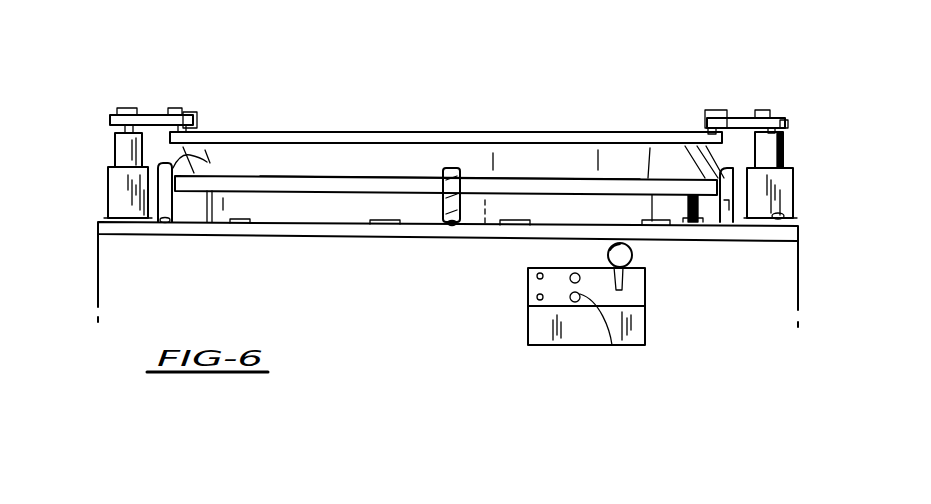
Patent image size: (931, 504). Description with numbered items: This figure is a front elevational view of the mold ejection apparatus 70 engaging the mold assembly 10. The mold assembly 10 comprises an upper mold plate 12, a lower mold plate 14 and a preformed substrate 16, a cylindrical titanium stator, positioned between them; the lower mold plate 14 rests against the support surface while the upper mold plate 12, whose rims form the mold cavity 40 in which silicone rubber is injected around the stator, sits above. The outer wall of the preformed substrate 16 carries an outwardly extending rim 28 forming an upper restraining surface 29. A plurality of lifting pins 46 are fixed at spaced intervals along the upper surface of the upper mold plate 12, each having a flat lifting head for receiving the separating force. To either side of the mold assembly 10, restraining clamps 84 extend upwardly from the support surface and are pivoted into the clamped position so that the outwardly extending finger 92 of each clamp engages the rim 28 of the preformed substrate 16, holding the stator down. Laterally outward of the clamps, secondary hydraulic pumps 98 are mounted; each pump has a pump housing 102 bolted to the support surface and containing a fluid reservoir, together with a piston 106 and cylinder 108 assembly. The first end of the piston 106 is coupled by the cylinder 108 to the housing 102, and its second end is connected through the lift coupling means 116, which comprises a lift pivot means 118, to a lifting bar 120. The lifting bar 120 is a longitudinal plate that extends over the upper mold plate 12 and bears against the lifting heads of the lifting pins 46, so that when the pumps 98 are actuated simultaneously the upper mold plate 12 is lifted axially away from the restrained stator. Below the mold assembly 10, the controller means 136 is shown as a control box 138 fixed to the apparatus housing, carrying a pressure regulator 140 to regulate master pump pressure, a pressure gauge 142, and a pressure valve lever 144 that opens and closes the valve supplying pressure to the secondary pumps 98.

The mold assembly 10 is at (263, 100).
The upper mold plate 12 is at (493, 132).
The lower mold plate 14 is at (200, 218).
The preformed substrate 16 is at (328, 208).
The outwardly extending rim 28 is at (322, 185).
The upper restraining surface 29 is at (214, 184).
The mold cavity 40 is at (370, 158).
The lifting pins 46 is at (182, 118).
The mold ejection apparatus 70 is at (78, 210).
The clamps 84 is at (448, 168).
The outwardly extending finger 92 is at (209, 161).
The secondary hydraulic pumps 98 is at (108, 185).
The pump housing 102 is at (785, 218).
The piston 106 is at (118, 128).
The cylinder 108 is at (782, 147).
The lift coupling means 116 is at (113, 108).
The lift pivot means 118 is at (469, 113).
The lifting bar 120 is at (150, 113).
The controller means 136 is at (510, 277).
The control box 138 is at (526, 316).
The pressure regulator 140 is at (612, 345).
The pressure gauge 142 is at (578, 272).
The pressure valve lever 144 is at (628, 280).